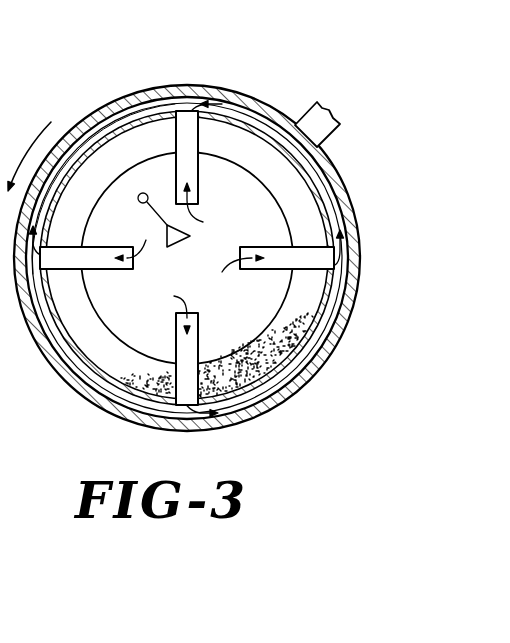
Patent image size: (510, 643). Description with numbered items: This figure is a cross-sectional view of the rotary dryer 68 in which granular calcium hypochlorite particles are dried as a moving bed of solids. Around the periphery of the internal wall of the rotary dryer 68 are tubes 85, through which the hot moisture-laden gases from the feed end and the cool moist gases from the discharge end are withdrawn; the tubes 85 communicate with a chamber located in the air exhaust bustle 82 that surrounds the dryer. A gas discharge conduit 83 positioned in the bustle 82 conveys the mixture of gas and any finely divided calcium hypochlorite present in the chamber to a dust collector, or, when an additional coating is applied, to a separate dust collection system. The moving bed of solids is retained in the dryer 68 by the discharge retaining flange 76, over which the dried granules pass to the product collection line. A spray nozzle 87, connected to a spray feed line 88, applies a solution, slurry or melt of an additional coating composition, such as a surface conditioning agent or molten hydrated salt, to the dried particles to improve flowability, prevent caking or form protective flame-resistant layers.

The rotary dryer 68 is at (314, 367).
The discharge retaining flange 76 is at (245, 145).
The air exhaust bustle 82 is at (136, 93).
The gas discharge conduit 83 is at (338, 130).
The tubes 85 is at (199, 172).
The spray nozzle 87 is at (170, 248).
The spray feed line 88 is at (146, 192).